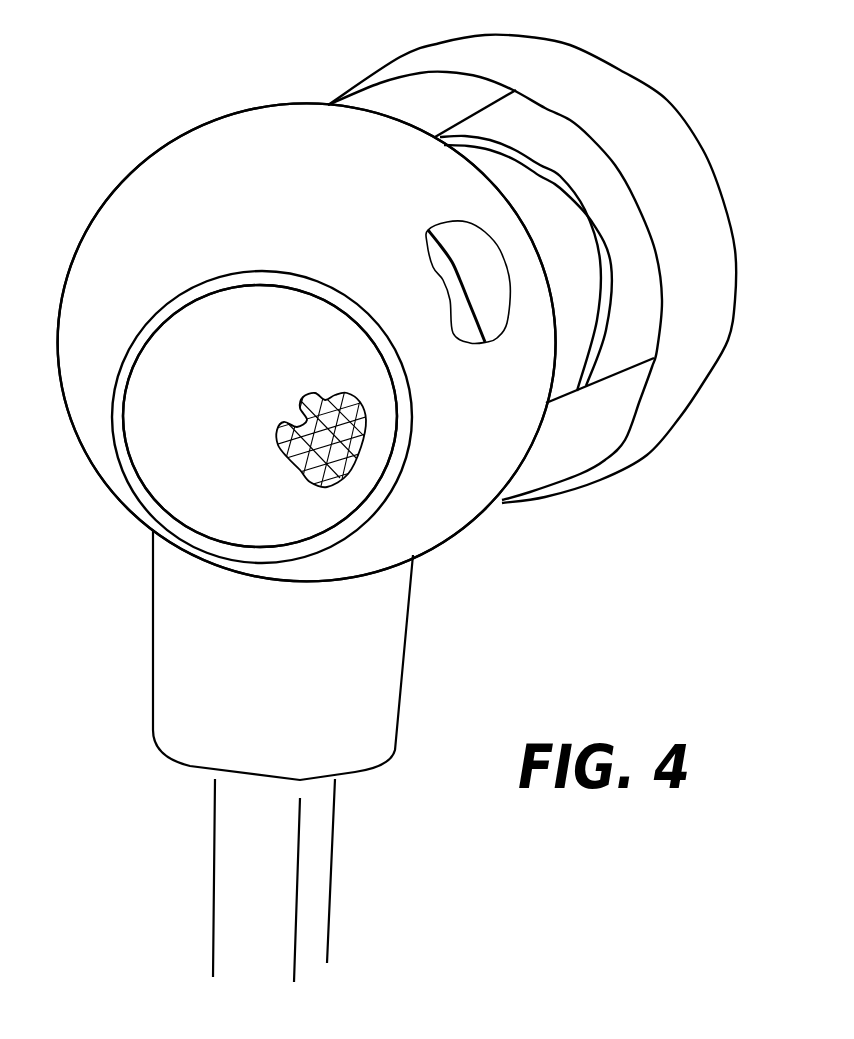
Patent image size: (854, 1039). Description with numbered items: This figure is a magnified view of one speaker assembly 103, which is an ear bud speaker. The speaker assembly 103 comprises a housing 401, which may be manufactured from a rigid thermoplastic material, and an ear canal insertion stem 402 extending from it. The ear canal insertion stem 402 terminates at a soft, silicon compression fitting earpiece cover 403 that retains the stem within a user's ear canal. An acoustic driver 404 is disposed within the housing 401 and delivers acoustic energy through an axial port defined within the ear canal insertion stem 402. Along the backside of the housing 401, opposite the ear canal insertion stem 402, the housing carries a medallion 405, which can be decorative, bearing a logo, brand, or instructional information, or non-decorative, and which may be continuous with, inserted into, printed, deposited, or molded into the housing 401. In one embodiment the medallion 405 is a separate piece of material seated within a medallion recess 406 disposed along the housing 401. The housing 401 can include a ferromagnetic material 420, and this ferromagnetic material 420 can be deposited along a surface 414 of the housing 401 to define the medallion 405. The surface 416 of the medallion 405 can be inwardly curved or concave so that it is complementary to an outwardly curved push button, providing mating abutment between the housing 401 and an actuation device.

The speaker assembly 103 is at (232, 73).
The housing 401 is at (125, 232).
The ear canal insertion stem 402 is at (568, 340).
The earpiece cover 403 is at (672, 162).
The acoustic driver 404 is at (482, 299).
The medallion 405 is at (228, 417).
The medallion recess 406 is at (215, 273).
The surface 414 is at (140, 282).
The surface 416 is at (267, 349).
The ferromagnetic material 420 is at (295, 455).